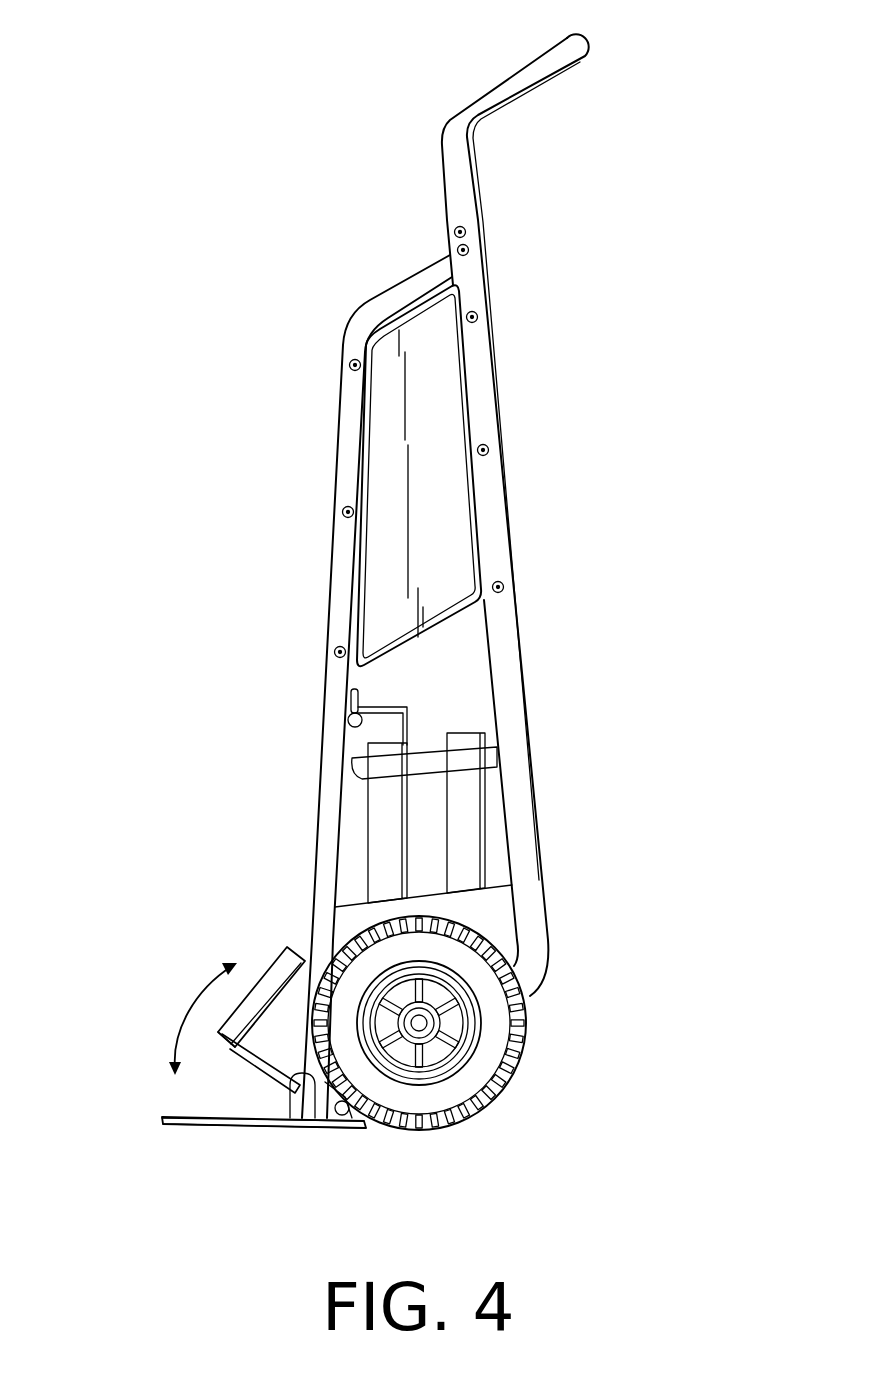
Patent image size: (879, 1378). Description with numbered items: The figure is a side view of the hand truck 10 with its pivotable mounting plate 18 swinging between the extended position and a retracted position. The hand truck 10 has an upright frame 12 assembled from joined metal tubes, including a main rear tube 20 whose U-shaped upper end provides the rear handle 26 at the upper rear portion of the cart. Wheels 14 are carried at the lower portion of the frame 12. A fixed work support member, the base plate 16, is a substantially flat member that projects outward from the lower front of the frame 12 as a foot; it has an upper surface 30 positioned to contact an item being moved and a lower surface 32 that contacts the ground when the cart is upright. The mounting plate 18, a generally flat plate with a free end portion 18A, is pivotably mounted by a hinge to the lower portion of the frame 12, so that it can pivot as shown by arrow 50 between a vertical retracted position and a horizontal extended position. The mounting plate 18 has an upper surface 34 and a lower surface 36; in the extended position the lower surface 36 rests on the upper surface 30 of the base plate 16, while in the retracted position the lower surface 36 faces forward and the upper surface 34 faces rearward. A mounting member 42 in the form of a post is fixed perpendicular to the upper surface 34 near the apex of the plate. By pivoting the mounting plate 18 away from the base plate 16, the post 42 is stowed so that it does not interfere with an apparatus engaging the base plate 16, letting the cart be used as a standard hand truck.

The hand truck 10 is at (330, 125).
The upright frame 12 is at (342, 592).
The wheels 14 is at (517, 1072).
The base plate 16 is at (218, 1128).
The pivotable mounting plate 18 is at (280, 1072).
The free end portion 18A is at (216, 1036).
The main rear tube 20 is at (492, 518).
The rear handle 26 is at (593, 34).
The upper surface 30 is at (187, 1117).
The lower surface 32 is at (190, 1127).
The upper surface 34 is at (317, 1120).
The lower surface 36 is at (253, 1064).
The mounting member 42 is at (283, 960).
The arrow 50 is at (182, 1010).